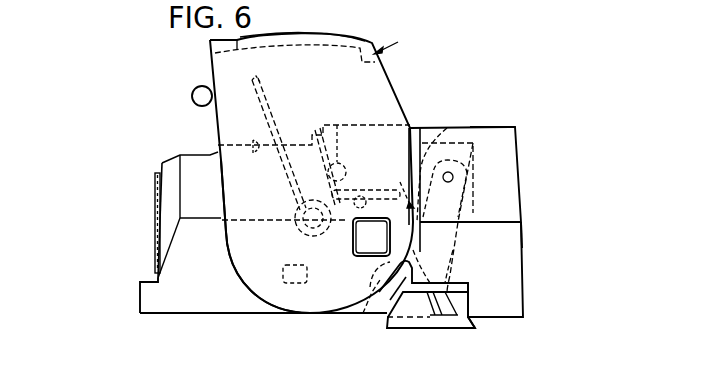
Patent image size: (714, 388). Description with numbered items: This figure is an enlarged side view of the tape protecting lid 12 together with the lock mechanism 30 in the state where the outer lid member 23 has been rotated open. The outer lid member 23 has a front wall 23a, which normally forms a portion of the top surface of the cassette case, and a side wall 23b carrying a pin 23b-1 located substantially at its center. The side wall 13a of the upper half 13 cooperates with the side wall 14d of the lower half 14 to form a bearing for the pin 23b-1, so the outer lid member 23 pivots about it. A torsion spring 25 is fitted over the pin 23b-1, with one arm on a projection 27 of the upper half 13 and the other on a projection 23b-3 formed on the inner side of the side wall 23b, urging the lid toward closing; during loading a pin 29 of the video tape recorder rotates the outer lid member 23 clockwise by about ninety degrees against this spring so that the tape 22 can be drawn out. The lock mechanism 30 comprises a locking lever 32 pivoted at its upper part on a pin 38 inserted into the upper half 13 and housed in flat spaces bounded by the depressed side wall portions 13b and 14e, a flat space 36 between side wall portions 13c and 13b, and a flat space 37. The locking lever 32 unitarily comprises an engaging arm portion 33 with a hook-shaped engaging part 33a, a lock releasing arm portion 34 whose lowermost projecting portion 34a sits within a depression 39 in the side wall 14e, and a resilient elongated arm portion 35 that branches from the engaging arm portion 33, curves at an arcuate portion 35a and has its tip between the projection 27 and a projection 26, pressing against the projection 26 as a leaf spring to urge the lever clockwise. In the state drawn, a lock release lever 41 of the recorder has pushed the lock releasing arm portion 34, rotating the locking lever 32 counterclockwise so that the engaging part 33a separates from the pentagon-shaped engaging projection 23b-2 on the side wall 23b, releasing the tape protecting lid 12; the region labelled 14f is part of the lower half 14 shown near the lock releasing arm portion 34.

The tape protecting lid 12 is at (396, 43).
The upper half 13 is at (520, 160).
The side wall 13a is at (515, 145).
The depressed side wall portion 13b is at (411, 127).
The side wall portion 13c is at (447, 128).
The lower half 14 is at (524, 267).
The side wall 14d is at (527, 243).
The depressed side wall portion 14e is at (232, 313).
The base recess 14f is at (490, 300).
The tape 22 is at (155, 208).
The outer lid member 23 is at (386, 72).
The front wall 23a is at (278, 34).
The side wall 23b is at (238, 264).
The pin 23b-1 is at (302, 232).
The engaging projection 23b-2 is at (290, 284).
The projection 23b-3 is at (253, 135).
The torsion spring 25 is at (272, 170).
The projection 26 is at (366, 203).
The projection 27 is at (337, 124).
The pin 29 is at (195, 88).
The lock mechanism 30 is at (470, 244).
The locking lever 32 is at (461, 210).
The engaging arm portion 33 is at (369, 265).
The engaging part 33a is at (363, 313).
The lock releasing arm portion 34 is at (458, 326).
The projecting portion 34a is at (451, 350).
The elongated arm portion 35 is at (368, 190).
The arcuate portion 35a is at (400, 181).
The flat space 36 is at (433, 147).
The flat space 37 is at (470, 266).
The pin 38 is at (451, 173).
The depression 39 is at (476, 323).
The lock release lever 41 is at (413, 328).